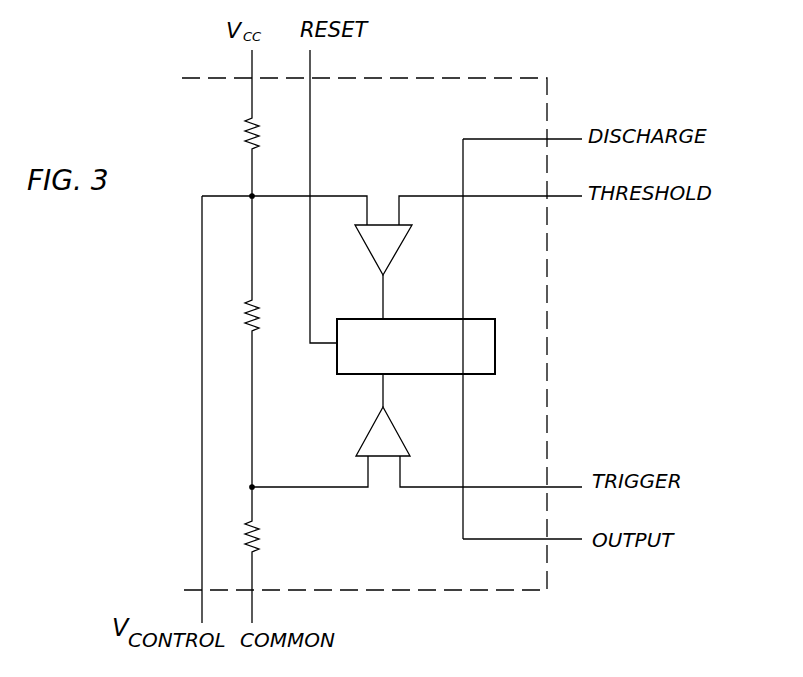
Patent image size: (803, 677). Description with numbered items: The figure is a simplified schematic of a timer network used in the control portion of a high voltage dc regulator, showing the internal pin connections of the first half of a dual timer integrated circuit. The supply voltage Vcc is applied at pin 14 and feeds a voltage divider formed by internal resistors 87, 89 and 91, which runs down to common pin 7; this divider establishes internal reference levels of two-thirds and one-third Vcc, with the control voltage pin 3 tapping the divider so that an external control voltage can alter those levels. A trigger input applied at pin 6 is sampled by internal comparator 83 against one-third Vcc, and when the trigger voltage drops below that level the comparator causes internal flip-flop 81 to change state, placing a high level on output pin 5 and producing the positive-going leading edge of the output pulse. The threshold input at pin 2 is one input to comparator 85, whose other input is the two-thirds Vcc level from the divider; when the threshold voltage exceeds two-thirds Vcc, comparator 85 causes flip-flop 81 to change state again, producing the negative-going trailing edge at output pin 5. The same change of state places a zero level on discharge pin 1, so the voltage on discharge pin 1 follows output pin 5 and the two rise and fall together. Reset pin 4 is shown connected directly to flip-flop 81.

The discharge pin 1 is at (522, 128).
The threshold input pin 2 is at (392, 200).
The control voltage pin 3 is at (209, 409).
The reset pin 4 is at (323, 196).
The output pin 5 is at (522, 527).
The trigger input pin 6 is at (417, 471).
The common pin 7 is at (261, 588).
The Vcc pin 14 is at (265, 82).
The internal flip-flop 81 is at (495, 360).
The internal comparator 83 is at (398, 431).
The comparator 85 is at (395, 257).
The internal resistor 87 is at (243, 134).
The internal resistor 89 is at (259, 317).
The internal resistor 91 is at (259, 534).